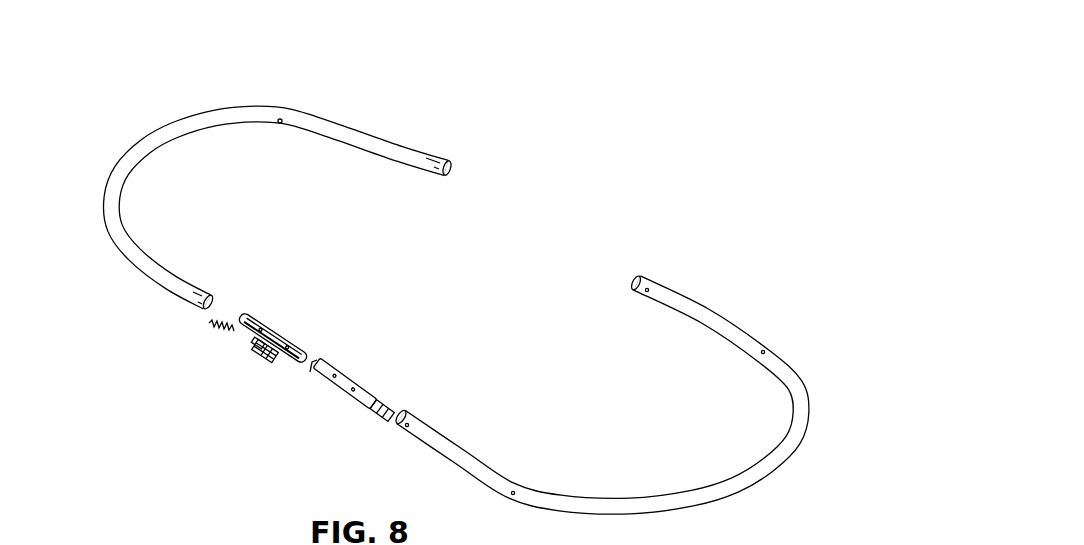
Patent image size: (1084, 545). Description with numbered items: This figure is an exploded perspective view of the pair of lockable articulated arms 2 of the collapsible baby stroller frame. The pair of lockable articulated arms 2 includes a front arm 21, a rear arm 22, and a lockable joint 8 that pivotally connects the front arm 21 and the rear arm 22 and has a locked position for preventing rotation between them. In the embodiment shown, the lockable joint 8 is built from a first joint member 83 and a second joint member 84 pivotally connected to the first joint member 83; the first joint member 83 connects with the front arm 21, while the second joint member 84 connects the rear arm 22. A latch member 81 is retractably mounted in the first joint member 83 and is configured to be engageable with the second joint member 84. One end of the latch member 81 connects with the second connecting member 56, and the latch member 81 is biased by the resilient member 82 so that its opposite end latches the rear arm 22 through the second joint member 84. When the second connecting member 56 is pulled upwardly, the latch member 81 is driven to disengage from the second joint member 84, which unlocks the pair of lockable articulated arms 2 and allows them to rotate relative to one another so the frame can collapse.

The pair of lockable articulated arms 2 is at (676, 155).
The front arm 21 is at (350, 126).
The rear arm 22 is at (730, 322).
The lockable joint 8 is at (302, 322).
The first joint member 83 is at (246, 316).
The latch member 81 is at (260, 353).
The second connecting member 56 is at (250, 338).
The resilient member 82 is at (209, 322).
The second joint member 84 is at (317, 366).